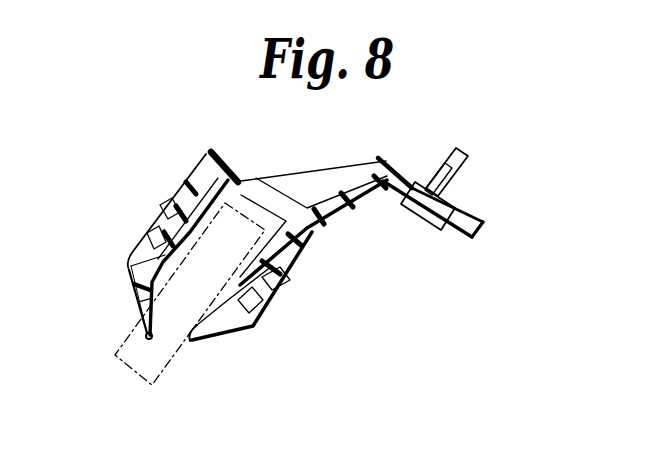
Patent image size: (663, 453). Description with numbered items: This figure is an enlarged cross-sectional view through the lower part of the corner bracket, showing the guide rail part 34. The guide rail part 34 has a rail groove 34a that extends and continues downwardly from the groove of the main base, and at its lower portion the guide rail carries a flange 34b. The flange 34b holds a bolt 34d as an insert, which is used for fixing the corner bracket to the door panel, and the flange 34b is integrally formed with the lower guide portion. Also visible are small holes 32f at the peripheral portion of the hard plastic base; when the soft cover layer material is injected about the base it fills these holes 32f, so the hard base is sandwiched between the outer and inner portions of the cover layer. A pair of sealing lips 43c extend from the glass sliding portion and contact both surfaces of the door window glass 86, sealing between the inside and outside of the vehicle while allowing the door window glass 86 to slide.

The guide rail part 34 is at (197, 180).
The rail groove 34a is at (247, 193).
The flange 34b is at (412, 177).
The bolt 34d is at (428, 209).
The small holes 32f is at (270, 287).
The sealing lips 43c is at (138, 307).
The door window glass 86 is at (131, 372).